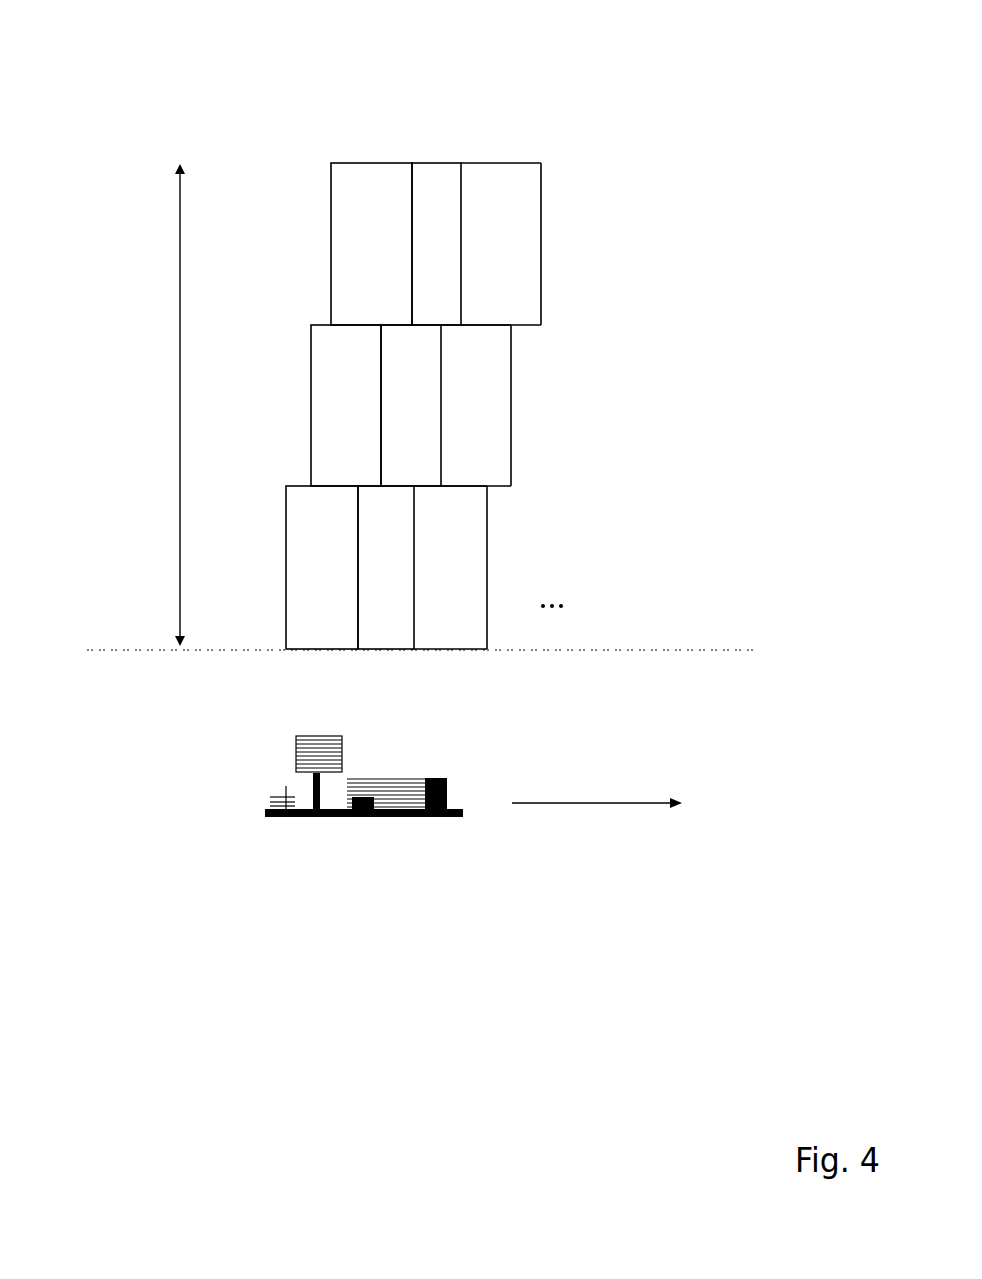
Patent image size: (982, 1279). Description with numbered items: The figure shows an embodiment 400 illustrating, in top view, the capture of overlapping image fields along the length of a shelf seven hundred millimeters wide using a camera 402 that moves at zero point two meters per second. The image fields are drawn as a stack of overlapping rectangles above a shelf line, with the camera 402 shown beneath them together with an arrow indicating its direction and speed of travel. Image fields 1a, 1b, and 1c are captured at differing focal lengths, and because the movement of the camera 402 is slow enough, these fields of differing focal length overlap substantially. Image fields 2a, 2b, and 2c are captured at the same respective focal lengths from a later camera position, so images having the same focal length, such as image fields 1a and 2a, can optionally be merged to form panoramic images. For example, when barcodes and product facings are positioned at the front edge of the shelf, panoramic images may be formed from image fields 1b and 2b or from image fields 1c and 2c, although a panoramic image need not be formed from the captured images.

The embodiment 400 is at (106, 101).
The camera 402 is at (230, 819).
The image field 1a is at (327, 567).
The image field 2a is at (422, 567).
The image field 1b is at (355, 405).
The image field 2b is at (446, 405).
The image field 1c is at (376, 244).
The image field 2c is at (476, 244).